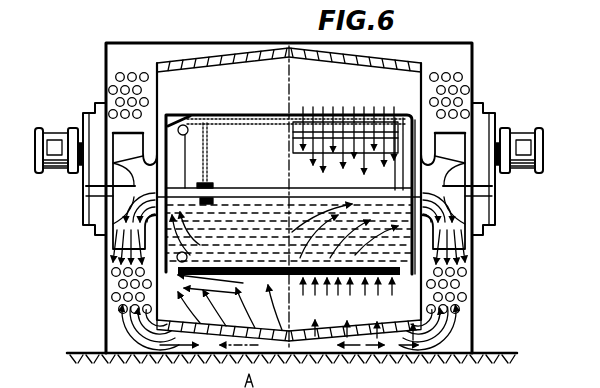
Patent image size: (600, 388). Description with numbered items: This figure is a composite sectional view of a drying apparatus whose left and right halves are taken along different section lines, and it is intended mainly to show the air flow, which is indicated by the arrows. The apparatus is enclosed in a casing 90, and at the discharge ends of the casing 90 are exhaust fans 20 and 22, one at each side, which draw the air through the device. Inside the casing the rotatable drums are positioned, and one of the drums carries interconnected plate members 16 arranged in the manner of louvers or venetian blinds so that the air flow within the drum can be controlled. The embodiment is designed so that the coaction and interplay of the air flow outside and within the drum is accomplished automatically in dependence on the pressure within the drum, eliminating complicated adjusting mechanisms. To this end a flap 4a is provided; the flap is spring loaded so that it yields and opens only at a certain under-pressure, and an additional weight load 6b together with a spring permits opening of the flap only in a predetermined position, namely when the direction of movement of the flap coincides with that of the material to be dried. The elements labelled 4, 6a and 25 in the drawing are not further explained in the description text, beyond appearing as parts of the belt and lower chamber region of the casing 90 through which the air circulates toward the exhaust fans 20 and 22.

The casing 90 is at (478, 76).
The exhaust fan 20 is at (93, 170).
The exhaust fan 22 is at (489, 217).
The flap 4a is at (180, 125).
The upper conveyor belt 6a is at (197, 145).
The plate member 16 is at (347, 125).
The belt 4 is at (172, 242).
The weight load 6b is at (187, 254).
The lower air chamber 25 is at (228, 272).